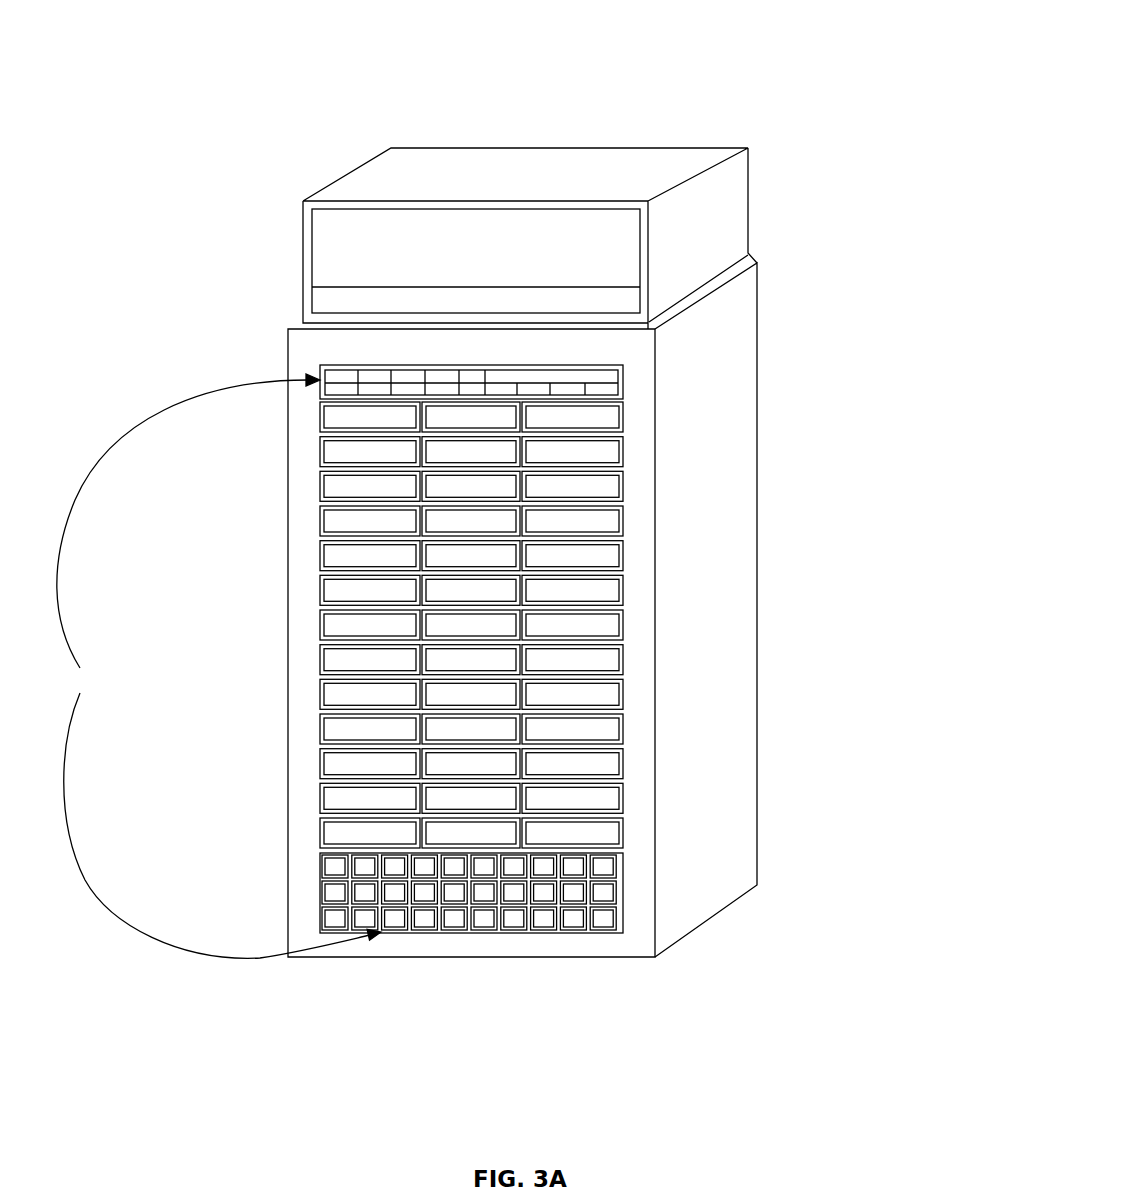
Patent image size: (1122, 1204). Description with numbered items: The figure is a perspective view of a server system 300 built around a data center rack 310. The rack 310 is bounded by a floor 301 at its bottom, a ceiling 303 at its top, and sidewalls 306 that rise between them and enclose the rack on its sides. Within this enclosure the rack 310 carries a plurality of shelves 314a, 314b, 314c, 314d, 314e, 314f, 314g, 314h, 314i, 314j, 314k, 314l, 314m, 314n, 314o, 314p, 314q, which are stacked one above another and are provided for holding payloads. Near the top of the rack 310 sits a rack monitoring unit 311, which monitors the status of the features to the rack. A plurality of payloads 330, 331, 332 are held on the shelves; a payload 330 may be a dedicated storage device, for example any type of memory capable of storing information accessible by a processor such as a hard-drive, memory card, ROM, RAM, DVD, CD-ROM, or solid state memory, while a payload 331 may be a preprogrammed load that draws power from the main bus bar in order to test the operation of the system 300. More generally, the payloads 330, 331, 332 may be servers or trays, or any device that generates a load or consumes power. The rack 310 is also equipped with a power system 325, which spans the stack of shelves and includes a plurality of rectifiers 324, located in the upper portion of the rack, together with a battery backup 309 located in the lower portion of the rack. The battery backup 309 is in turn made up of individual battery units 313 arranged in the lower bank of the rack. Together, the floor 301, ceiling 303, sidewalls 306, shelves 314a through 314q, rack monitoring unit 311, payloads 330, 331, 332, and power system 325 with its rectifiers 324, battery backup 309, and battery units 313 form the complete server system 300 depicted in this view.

The server system 300 is at (778, 87).
The floor 301 is at (485, 962).
The ceiling 303 is at (545, 363).
The sidewalls 306 is at (288, 328).
The battery backup 309 is at (635, 927).
The data center rack 310 is at (723, 610).
The rack monitoring unit 311 is at (624, 381).
The battery units 313 is at (483, 920).
The shelf 314a is at (319, 938).
The shelf 314b is at (319, 912).
The shelf 314c is at (319, 888).
The shelf 314d is at (319, 860).
The shelf 314e is at (319, 830).
The shelf 314f is at (319, 794).
The shelf 314g is at (319, 760).
The shelf 314h is at (319, 725).
The shelf 314i is at (319, 690).
The shelf 314j is at (319, 655).
The shelf 314k is at (319, 620).
The shelf 314l is at (319, 586).
The shelf 314m is at (319, 551).
The shelf 314n is at (319, 516).
The shelf 314o is at (319, 482).
The shelf 314p is at (319, 446).
The shelf 314q is at (319, 412).
The rectifiers 324 is at (313, 377).
The power system 325 is at (219, 669).
The payload 330 is at (622, 810).
The payload 331 is at (622, 740).
The payload 332 is at (622, 668).